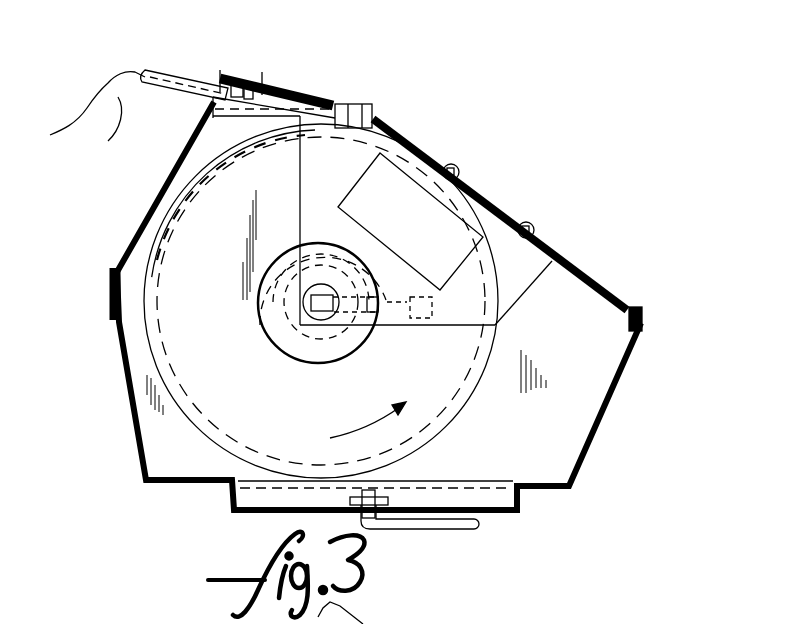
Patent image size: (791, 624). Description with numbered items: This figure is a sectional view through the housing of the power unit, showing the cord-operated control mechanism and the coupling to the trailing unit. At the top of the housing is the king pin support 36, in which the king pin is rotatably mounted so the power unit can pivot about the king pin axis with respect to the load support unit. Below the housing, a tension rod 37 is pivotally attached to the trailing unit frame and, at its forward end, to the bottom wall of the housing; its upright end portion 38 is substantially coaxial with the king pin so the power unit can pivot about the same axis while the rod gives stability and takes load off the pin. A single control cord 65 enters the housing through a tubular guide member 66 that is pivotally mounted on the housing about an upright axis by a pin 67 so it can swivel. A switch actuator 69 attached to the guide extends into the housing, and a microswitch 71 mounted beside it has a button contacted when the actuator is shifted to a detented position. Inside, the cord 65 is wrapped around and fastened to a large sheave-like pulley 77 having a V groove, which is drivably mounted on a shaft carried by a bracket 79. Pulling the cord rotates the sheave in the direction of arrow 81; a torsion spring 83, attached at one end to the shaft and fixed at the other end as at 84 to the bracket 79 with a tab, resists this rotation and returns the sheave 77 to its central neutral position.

The king pin support 36 is at (373, 108).
The tension rod 37 is at (478, 531).
The end portion 38 is at (380, 497).
The control cord 65 is at (92, 118).
The guide member 66 is at (163, 73).
The pin 67 is at (243, 75).
The switch actuator 69 is at (248, 84).
The microswitch 71 is at (257, 78).
The sheave-like pulley 77 is at (195, 407).
The bracket 79 is at (513, 300).
The arrow 81 is at (340, 292).
The torsion spring 83 is at (290, 356).
The tab fixing point 84 is at (418, 318).